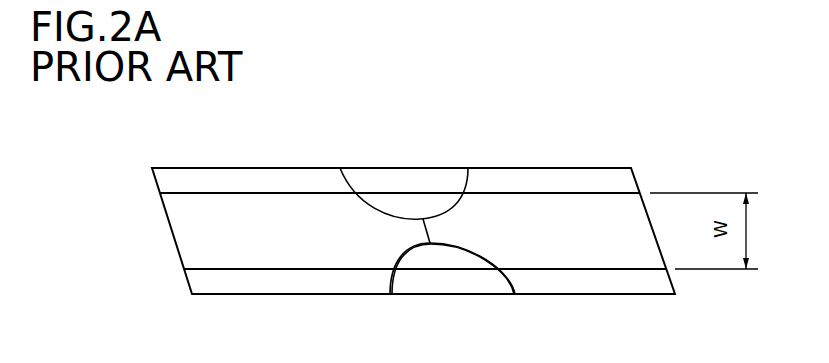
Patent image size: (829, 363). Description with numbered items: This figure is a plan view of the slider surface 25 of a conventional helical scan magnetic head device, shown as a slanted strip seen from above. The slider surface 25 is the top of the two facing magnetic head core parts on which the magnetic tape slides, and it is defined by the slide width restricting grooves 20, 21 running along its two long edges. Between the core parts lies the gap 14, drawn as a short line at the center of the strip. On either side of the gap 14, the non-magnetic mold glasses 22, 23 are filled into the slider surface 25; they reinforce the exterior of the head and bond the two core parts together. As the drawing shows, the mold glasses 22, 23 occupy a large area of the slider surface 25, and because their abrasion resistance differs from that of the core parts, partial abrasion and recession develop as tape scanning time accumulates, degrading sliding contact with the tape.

The gap 14 is at (427, 232).
The slide width restricting groove 20 is at (252, 185).
The slide width restricting groove 21 is at (297, 280).
The mold glass 22 is at (392, 200).
The mold glass 23 is at (445, 258).
The slider surface 25 is at (623, 230).